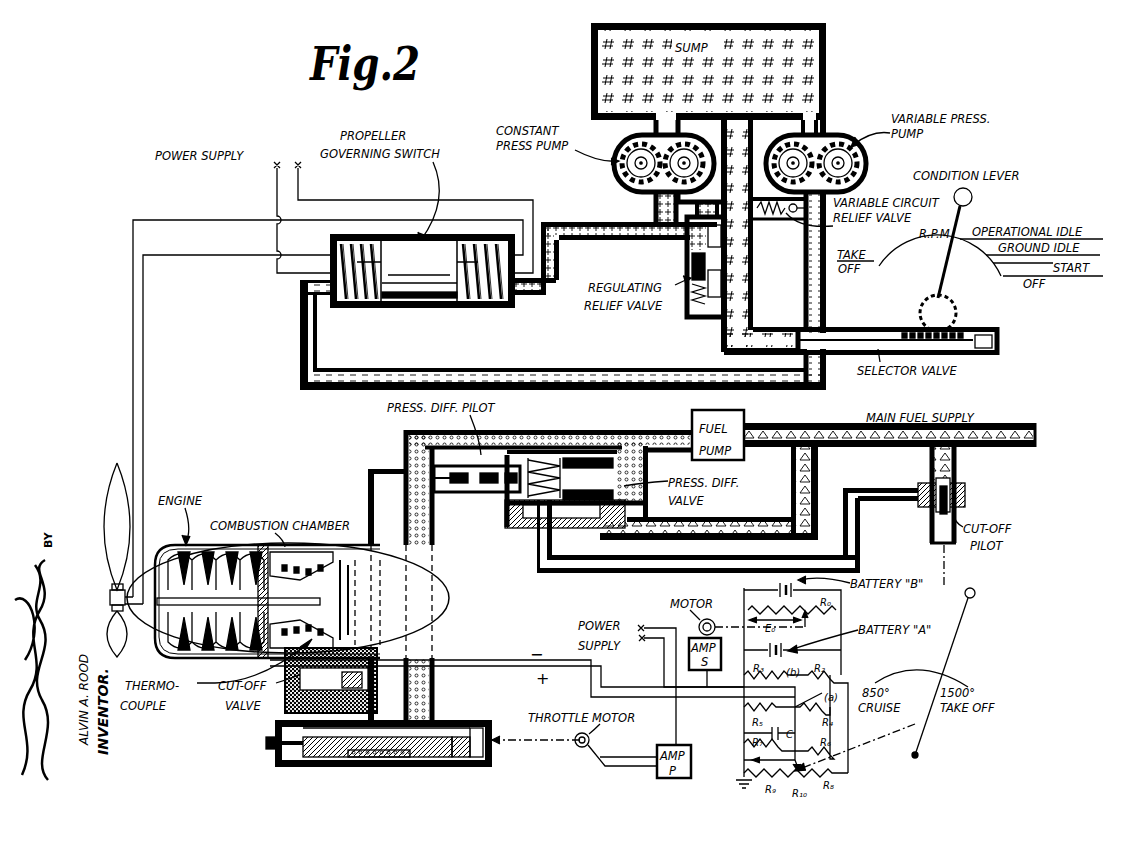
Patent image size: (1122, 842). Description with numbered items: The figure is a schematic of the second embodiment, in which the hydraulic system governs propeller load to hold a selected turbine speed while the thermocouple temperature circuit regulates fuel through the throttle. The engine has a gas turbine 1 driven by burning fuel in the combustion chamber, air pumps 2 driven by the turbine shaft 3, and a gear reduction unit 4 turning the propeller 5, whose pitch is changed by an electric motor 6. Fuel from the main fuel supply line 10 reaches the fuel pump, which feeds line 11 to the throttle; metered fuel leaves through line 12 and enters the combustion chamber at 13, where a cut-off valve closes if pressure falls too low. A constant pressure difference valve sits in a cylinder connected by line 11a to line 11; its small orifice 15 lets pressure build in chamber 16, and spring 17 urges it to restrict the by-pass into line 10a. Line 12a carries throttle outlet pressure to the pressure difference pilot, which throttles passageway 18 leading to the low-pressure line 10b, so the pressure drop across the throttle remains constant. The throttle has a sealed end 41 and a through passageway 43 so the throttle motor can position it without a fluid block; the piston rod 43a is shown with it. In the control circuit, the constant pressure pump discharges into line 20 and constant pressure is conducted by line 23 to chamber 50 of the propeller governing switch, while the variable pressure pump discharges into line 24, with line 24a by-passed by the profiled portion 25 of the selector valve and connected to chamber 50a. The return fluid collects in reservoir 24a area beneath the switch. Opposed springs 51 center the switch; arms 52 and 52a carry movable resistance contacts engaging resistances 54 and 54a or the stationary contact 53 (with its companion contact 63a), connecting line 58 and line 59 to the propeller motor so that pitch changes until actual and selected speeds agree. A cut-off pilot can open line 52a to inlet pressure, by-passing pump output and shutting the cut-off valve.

The gas turbine 1 is at (325, 574).
The air pumps 2 is at (234, 583).
The turbine shaft 3 is at (216, 630).
The gear reduction unit 4 is at (135, 643).
The propeller 5 is at (110, 497).
The electric motor to change propeller pitch 6 is at (110, 592).
The main fuel supply line 10 is at (812, 428).
The by-pass line 10a is at (720, 517).
The low-pressure line 10b is at (537, 541).
The throttle inlet line 11 is at (404, 437).
The line 11a is at (632, 465).
The throttle outlet line 12 is at (371, 703).
The line 12a is at (366, 488).
The combustion chamber fuel entry 13 is at (380, 611).
The small orifice 15 is at (612, 480).
The chamber 16 is at (588, 474).
The spring 17 is at (541, 454).
The passageway 18 is at (512, 505).
The constant pressure pump discharge line 20 is at (657, 209).
The constant pressure line 23 is at (559, 270).
The variable pressure line 24 is at (824, 279).
The variable pressure line 24a is at (366, 390).
The profiled portion of selector valve 25 is at (838, 332).
The sealed end of throttle 41 is at (462, 762).
The through passageway 43 is at (415, 767).
The piston rod 43a is at (318, 746).
The chamber 50 is at (490, 302).
The chamber 50a is at (369, 301).
The opposed springs 51 is at (352, 243).
The arm 52 is at (481, 244).
The arm 52a is at (395, 254).
The stationary contact member 53 is at (478, 302).
The resistance 54 is at (496, 301).
The resistance 54a is at (352, 301).
The line 58 is at (145, 340).
The line 59 is at (131, 324).
The switch contact 63a is at (362, 301).